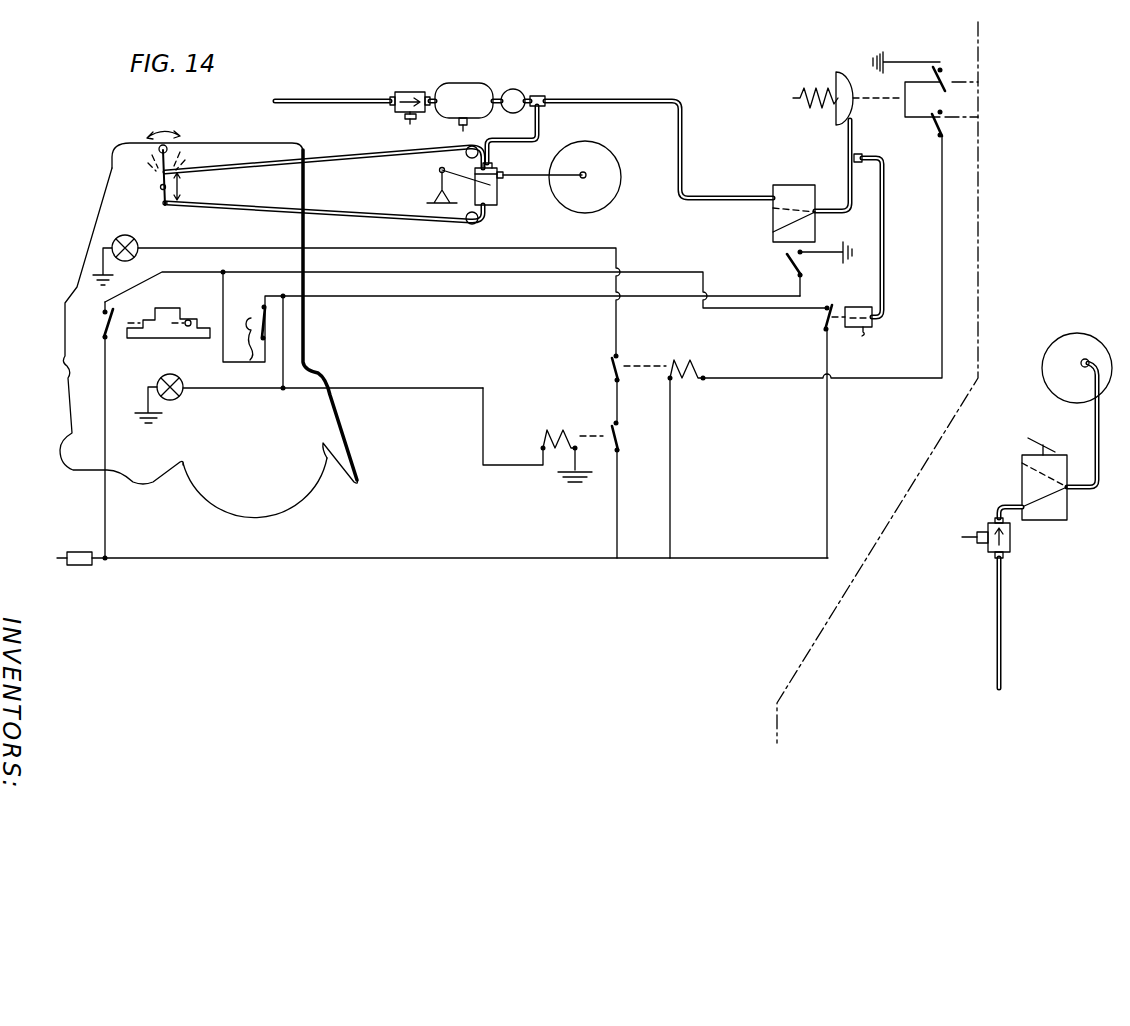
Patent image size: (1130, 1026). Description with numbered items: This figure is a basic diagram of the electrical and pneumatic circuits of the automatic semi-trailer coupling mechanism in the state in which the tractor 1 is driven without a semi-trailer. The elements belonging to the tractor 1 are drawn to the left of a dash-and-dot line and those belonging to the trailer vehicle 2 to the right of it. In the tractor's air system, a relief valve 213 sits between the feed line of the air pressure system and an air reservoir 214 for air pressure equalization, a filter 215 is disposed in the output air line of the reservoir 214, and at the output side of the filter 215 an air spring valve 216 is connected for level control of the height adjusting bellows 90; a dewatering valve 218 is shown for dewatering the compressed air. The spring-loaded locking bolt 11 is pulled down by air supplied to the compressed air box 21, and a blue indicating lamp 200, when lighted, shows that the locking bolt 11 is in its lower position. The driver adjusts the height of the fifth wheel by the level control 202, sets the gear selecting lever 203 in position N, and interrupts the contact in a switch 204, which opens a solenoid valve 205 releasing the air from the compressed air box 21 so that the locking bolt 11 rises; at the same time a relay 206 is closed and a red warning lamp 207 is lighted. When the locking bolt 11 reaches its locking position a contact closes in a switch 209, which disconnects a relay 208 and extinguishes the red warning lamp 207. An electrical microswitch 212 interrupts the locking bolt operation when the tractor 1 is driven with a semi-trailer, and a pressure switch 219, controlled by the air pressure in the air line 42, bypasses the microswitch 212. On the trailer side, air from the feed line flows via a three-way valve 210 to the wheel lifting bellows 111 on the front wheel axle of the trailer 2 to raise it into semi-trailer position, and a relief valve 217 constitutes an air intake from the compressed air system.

The tractor 1 is at (643, 66).
The trailer vehicle 2 is at (1065, 313).
The locking bolt 11 is at (875, 97).
The compressed air box 21 is at (794, 102).
The air line 42 is at (848, 141).
The height adjusting bellows 90 is at (612, 196).
The wheel lifting bellows 111 is at (1052, 381).
The blue indicating lamp 200 is at (178, 398).
The level control 202 is at (181, 189).
The gear selecting lever 203 is at (190, 332).
The switch 204 is at (511, 329).
The solenoid valve 205 is at (806, 260).
The relay 206 is at (548, 433).
The red warning lamp 207 is at (137, 240).
The relay 208 is at (680, 362).
The switch 209 is at (948, 100).
The three-way valve 210 is at (1060, 512).
The electrical microswitch 212 is at (103, 324).
The relief valve 213 is at (410, 92).
The air reservoir 214 is at (486, 90).
The filter 215 is at (527, 82).
The air spring valve 216 is at (497, 197).
The relief valve 217 is at (990, 523).
The dewatering valve 218 is at (460, 126).
The pressure switch 219 is at (857, 431).
The position N is at (148, 326).